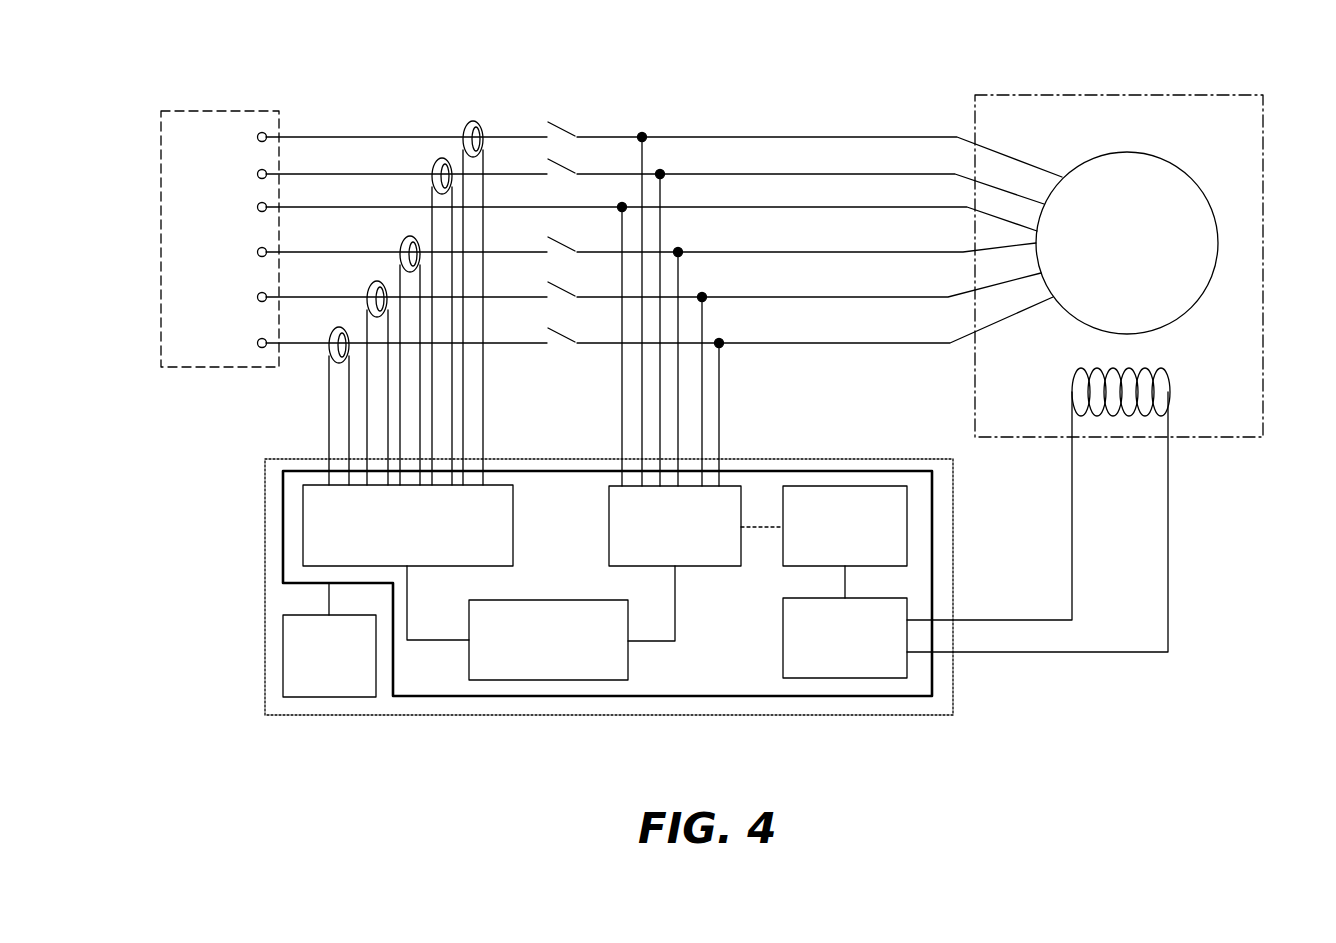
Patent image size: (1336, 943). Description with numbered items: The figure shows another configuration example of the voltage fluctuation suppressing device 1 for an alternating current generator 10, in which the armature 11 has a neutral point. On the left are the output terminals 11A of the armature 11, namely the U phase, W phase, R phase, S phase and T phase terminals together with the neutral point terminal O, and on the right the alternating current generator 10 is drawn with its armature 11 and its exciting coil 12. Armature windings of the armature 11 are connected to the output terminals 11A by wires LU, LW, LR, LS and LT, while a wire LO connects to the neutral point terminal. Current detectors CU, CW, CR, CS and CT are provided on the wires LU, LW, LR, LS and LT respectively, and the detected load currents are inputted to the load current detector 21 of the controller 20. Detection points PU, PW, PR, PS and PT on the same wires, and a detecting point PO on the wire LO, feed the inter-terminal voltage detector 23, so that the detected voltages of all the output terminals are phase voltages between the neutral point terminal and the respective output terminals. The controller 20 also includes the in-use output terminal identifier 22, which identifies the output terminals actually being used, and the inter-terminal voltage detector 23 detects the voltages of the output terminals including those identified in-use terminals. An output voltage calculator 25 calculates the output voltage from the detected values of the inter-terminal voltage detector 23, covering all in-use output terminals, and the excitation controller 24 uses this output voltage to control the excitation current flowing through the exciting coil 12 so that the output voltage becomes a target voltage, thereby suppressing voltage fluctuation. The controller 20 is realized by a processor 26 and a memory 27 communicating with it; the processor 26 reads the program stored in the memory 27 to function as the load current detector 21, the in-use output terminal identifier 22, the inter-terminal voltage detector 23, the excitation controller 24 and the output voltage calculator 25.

The voltage fluctuation suppressing device 1 is at (803, 80).
The alternating current generator 10 is at (1077, 95).
The armature 11 is at (1192, 178).
The output terminals 11A is at (263, 108).
The exciting coil 12 is at (1170, 380).
The controller 20 is at (605, 715).
The load current detector 21 is at (303, 525).
The in-use output terminal identifier 22 is at (483, 680).
The inter-terminal voltage detector 23 is at (609, 487).
The excitation controller 24 is at (845, 678).
The output voltage calculator 25 is at (907, 530).
The processor 26 is at (433, 697).
The memory 27 is at (328, 697).
The current detector CU is at (463, 128).
The current detector CW is at (432, 166).
The current detector CR is at (400, 244).
The current detector CS is at (367, 290).
The current detector CT is at (330, 335).
The detection point PU is at (642, 137).
The detection point PW is at (660, 174).
The detecting point PO is at (622, 207).
The detection point PR is at (678, 252).
The detection point PS is at (702, 297).
The detection point PT is at (719, 343).
The wire LU is at (750, 137).
The wire LW is at (850, 174).
The wire LO is at (904, 207).
The wire LR is at (773, 255).
The wire LS is at (822, 300).
The wire LT is at (865, 347).